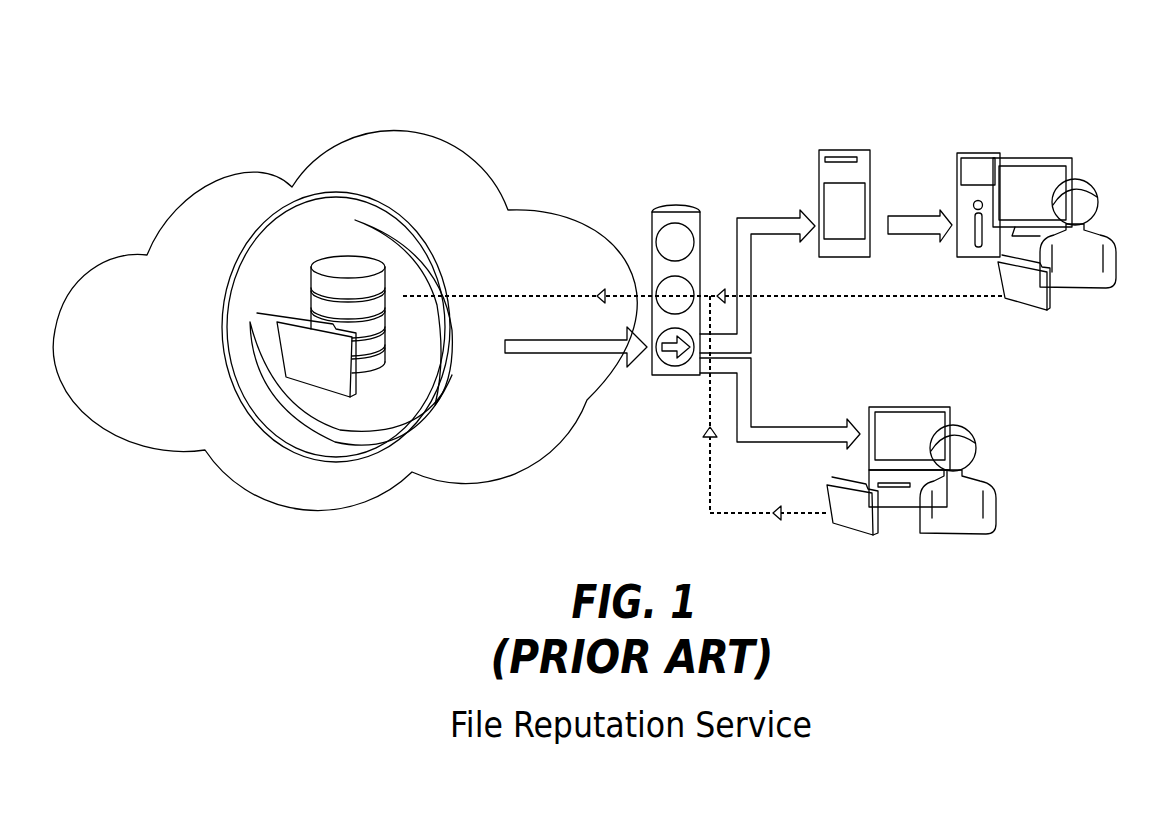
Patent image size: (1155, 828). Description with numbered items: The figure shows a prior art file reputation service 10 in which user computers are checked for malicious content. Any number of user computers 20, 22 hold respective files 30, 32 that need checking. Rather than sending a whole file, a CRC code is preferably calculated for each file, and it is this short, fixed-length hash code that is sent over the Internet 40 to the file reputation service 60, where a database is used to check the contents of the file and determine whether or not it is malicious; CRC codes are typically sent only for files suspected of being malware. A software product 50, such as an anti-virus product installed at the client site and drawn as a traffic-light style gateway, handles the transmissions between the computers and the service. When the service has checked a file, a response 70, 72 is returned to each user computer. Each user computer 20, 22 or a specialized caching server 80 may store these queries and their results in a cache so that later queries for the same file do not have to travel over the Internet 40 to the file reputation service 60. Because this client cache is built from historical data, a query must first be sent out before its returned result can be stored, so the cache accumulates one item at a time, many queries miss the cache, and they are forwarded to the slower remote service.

The file reputation service 10 is at (203, 97).
The user computer 20 is at (940, 403).
The user computer 22 is at (1055, 158).
The file 30 is at (883, 523).
The file 32 is at (1042, 298).
The Internet 40 is at (472, 167).
The software product 50 is at (677, 208).
The file reputation service 60 is at (362, 373).
The response 70 is at (773, 225).
The response 72 is at (809, 435).
The caching server 80 is at (858, 152).